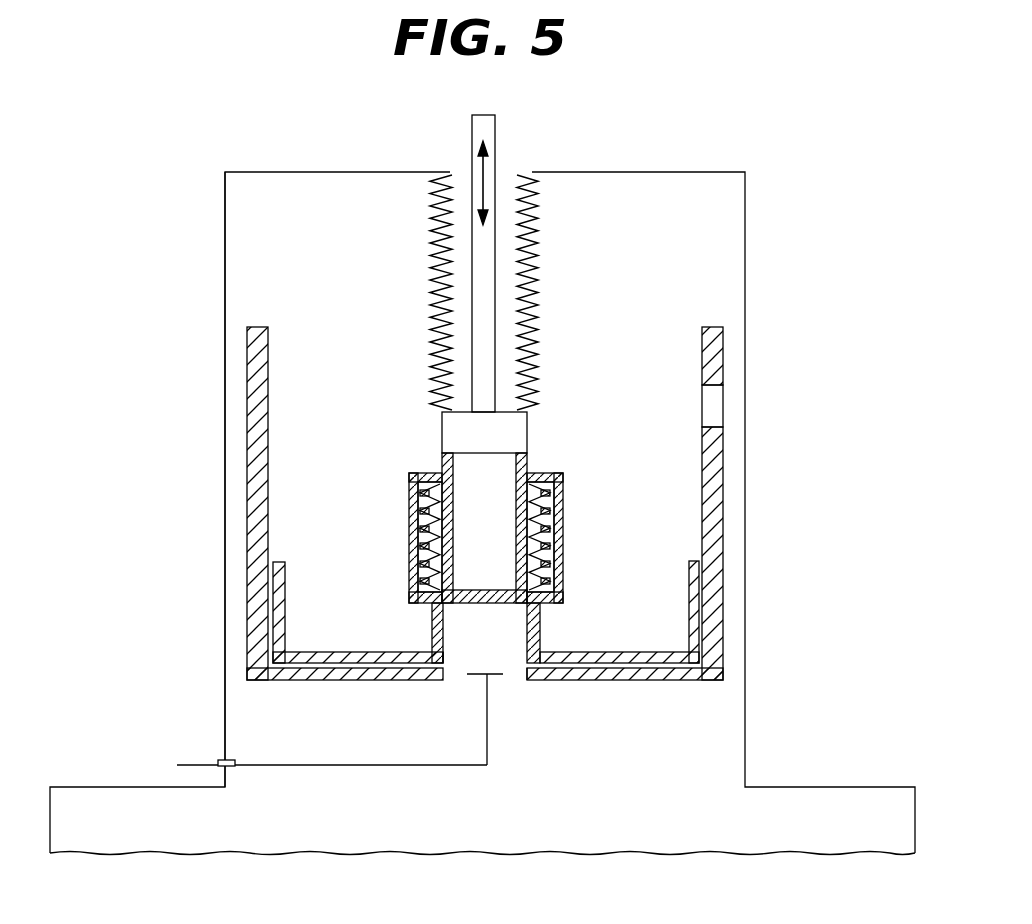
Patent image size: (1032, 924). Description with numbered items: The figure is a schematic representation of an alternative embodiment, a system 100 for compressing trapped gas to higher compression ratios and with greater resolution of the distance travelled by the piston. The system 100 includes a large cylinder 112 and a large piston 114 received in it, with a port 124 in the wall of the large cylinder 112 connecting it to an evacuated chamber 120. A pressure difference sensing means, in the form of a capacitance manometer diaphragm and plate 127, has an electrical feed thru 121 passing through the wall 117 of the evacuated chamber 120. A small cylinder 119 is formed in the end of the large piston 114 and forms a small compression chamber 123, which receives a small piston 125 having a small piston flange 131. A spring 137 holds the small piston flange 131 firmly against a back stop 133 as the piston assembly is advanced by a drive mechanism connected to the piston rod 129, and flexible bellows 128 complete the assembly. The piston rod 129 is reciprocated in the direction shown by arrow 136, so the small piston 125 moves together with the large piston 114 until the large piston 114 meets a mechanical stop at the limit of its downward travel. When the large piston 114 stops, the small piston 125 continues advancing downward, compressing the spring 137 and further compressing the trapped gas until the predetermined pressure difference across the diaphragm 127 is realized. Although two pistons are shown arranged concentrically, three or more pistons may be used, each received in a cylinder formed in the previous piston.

The system 100 is at (770, 282).
The large cylinder 112 is at (725, 362).
The large piston 114 is at (697, 635).
The wall 117 is at (223, 503).
The small cylinder 119 is at (543, 630).
The evacuated chamber 120 is at (258, 714).
The electrical feed thru 121 is at (219, 768).
The small compression chamber 123 is at (472, 648).
The port 124 is at (726, 408).
The small piston 125 is at (545, 590).
The capacitance manometer diaphragm and plate 127 is at (505, 683).
The flexible bellows 128 is at (540, 257).
The piston rod 129 is at (497, 165).
The small piston flange 131 is at (548, 490).
The back stop 133 is at (540, 475).
The arrow 136 is at (477, 178).
The spring 137 is at (548, 540).